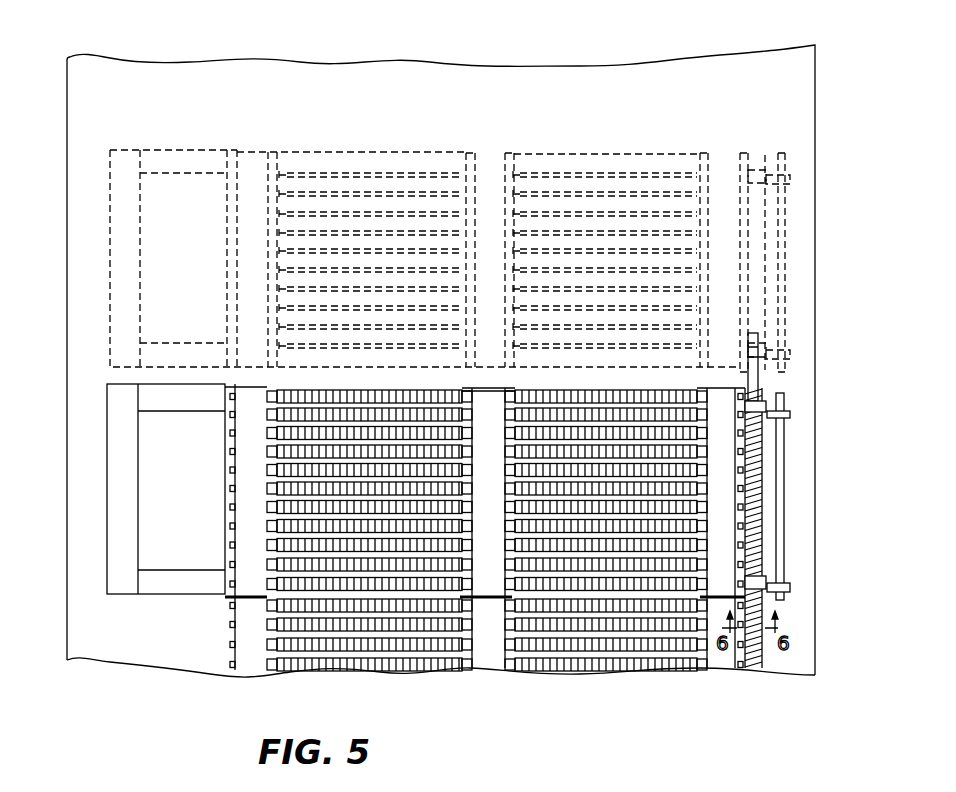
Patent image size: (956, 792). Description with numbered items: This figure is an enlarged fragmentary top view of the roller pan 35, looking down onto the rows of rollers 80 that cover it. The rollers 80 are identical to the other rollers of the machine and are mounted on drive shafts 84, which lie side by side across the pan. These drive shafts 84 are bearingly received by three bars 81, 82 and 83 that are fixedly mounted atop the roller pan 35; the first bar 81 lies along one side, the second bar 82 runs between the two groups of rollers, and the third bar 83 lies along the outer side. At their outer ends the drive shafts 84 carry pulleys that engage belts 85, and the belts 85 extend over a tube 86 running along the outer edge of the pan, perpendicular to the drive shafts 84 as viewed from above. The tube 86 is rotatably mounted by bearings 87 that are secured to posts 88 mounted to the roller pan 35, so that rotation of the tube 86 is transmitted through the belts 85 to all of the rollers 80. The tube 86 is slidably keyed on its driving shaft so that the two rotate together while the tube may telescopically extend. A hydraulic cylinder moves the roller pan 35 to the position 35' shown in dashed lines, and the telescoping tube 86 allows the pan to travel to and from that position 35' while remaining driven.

The roller pan 35 is at (387, 556).
The extended position of roller pan 35' is at (412, 202).
The rollers 80 is at (340, 590).
The bar 81 is at (253, 467).
The bar 82 is at (489, 582).
The bar 83 is at (720, 553).
The drive shafts 84 is at (508, 586).
The belts 85 is at (762, 490).
The tube 86 is at (762, 463).
The bearings 87 is at (762, 402).
The posts 88 is at (790, 413).